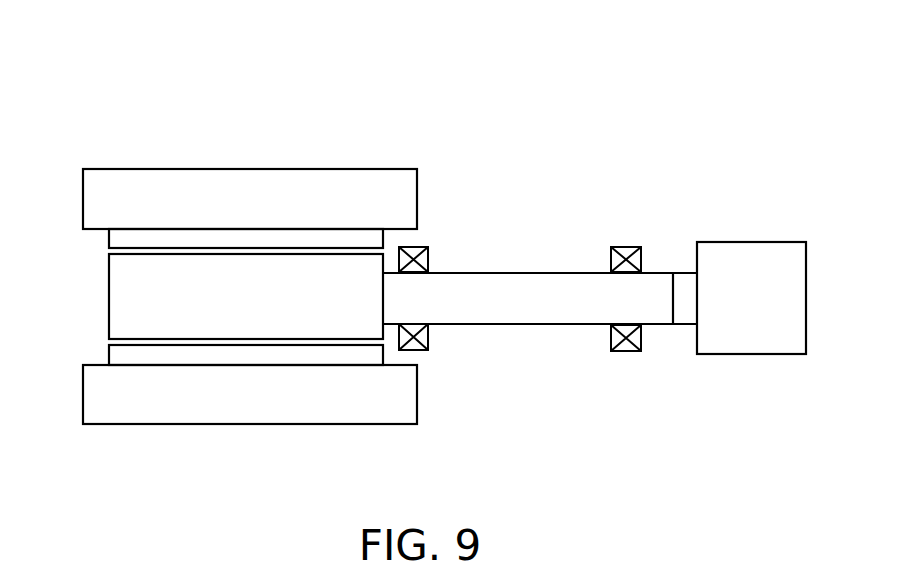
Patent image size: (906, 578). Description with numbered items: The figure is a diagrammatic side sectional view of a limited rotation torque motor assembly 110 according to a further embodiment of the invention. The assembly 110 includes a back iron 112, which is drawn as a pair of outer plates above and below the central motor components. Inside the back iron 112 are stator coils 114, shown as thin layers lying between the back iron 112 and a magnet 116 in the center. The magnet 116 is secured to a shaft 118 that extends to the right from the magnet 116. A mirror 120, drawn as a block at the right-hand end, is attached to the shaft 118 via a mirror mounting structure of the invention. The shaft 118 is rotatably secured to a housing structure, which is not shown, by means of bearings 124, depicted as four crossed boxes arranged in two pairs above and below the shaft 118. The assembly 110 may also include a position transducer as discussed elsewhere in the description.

The limited rotation torque motor assembly 110 is at (215, 80).
The back iron 112 is at (296, 168).
The stator coils 114 is at (109, 240).
The magnet 116 is at (109, 300).
The shaft 118 is at (543, 327).
The mirror 120 is at (763, 242).
The bearings 124 is at (428, 247).